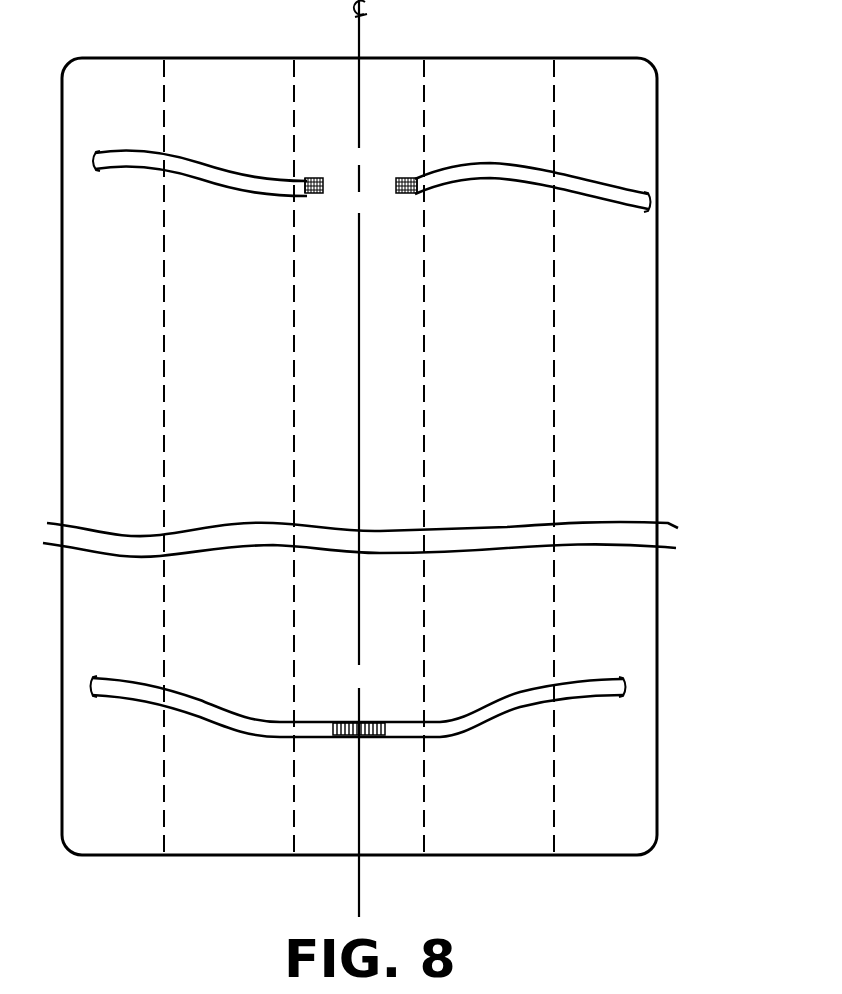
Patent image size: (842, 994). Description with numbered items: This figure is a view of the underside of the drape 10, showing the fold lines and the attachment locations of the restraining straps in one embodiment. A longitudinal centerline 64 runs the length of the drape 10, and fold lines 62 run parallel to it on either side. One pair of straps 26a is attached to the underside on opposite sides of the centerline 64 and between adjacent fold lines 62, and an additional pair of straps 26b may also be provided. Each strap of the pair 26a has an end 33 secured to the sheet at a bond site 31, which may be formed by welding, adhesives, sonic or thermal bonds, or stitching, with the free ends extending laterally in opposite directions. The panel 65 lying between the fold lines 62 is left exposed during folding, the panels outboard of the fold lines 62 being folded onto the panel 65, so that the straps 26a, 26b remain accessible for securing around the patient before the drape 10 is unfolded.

The drape 10 is at (603, 104).
The longitudinal centerline 64 is at (362, 37).
The fold lines 62 is at (164, 126).
The panel 65 is at (400, 411).
The straps 26a is at (195, 169).
The additional pair of straps 26b is at (438, 724).
The bond sites 31 is at (304, 180).
The end 33 is at (313, 195).